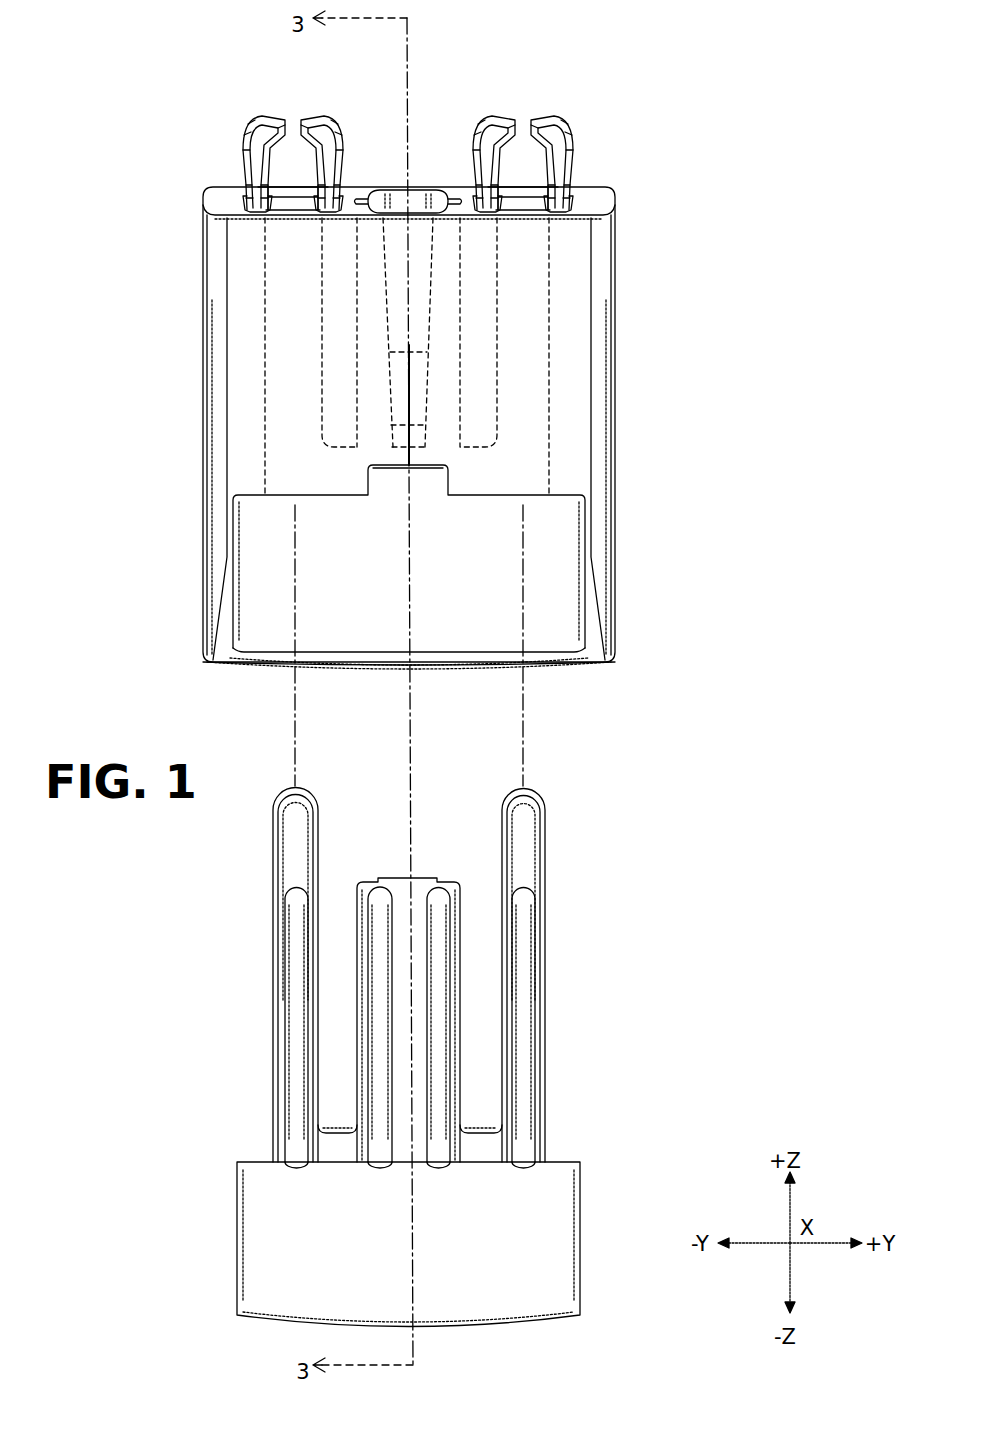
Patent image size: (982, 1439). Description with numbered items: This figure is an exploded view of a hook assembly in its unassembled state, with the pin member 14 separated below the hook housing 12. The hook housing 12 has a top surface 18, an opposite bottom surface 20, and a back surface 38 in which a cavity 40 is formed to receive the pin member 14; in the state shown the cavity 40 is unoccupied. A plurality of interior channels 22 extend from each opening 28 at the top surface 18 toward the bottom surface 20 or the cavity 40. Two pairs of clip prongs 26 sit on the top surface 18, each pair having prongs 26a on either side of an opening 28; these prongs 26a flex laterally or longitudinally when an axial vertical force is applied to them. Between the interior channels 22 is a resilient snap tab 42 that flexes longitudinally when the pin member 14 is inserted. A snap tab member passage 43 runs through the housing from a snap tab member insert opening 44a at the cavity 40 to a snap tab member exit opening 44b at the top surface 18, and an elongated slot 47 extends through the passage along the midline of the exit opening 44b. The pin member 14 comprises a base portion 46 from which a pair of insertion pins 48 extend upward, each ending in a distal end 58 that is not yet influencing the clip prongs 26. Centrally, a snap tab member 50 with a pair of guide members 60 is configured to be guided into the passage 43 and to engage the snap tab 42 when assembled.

The hook housing 12 is at (106, 249).
The pin member 14 is at (160, 986).
The top surface 18 is at (596, 198).
The bottom surface 20 is at (600, 664).
The interior channels 22 is at (283, 349).
The clip prongs 26 is at (297, 104).
The prongs 26a is at (272, 116).
The opening 28 is at (295, 201).
The back surface 38 is at (460, 486).
The cavity 40 is at (388, 634).
The snap tab 42 is at (408, 389).
The snap tab member passage 43 is at (390, 482).
The snap tab member insert opening 44a is at (411, 468).
The snap tab member exit opening 44b is at (418, 203).
The base portion 46 is at (558, 1300).
The elongated slot 47 is at (457, 200).
The insertion pins 48 is at (296, 1046).
The snap tab member 50 is at (413, 882).
The distal end 58 is at (290, 789).
The guide members 60 is at (378, 970).